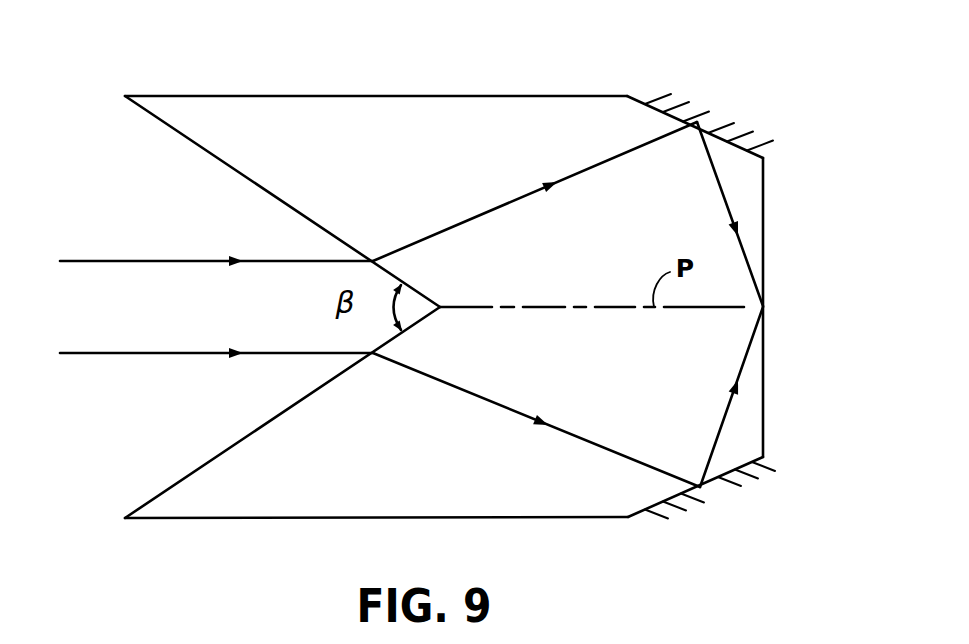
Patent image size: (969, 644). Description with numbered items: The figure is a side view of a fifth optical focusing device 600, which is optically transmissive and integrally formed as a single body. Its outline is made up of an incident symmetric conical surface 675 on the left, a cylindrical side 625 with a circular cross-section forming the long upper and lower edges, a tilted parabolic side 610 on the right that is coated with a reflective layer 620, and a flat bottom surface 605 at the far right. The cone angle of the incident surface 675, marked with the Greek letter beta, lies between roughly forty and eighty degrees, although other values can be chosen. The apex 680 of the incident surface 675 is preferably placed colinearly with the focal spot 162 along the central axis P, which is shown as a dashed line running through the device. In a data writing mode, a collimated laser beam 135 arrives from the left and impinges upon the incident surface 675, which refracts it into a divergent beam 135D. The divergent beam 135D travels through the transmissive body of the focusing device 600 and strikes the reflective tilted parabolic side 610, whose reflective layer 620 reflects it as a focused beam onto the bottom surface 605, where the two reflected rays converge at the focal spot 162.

The focusing device 600 is at (464, 272).
The cylindrical side 625 is at (477, 96).
The incident symmetric conical surface 675 is at (190, 472).
The apex 680 is at (443, 303).
The tilted parabolic side 610 is at (730, 132).
The reflective layer 620 is at (712, 490).
The flat bottom surface 605 is at (765, 428).
The collimated laser beam 135 is at (120, 261).
The divergent beam 135D is at (478, 212).
The focal spot 162 is at (767, 307).